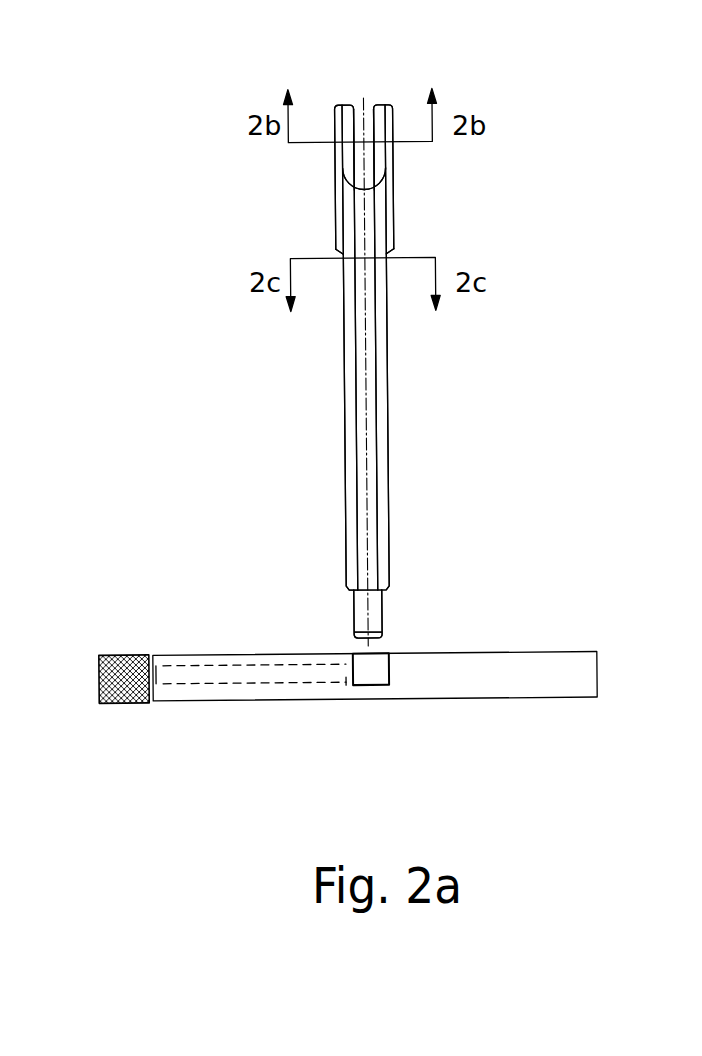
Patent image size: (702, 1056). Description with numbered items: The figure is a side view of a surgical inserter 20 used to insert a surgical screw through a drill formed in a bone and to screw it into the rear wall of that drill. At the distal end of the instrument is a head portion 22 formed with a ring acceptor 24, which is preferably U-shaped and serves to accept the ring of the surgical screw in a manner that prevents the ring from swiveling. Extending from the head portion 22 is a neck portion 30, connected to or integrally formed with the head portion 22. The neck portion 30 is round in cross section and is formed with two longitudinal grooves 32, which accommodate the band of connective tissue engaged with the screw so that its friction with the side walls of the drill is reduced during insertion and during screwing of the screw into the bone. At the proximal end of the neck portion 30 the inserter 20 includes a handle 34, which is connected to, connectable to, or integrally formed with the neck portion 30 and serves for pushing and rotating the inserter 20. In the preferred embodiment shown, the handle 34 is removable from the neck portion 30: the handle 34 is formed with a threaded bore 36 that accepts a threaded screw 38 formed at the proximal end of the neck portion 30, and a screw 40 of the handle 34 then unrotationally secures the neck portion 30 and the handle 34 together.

The surgical inserter 20 is at (294, 383).
The head portion 22 is at (393, 207).
The ring acceptor 24 is at (361, 113).
The neck portion 30 is at (388, 404).
The longitudinal grooves 32 is at (372, 493).
The handle 34 is at (495, 675).
The threaded bore 36 is at (373, 680).
The threaded screw 38 is at (377, 617).
The screw 40 is at (125, 693).